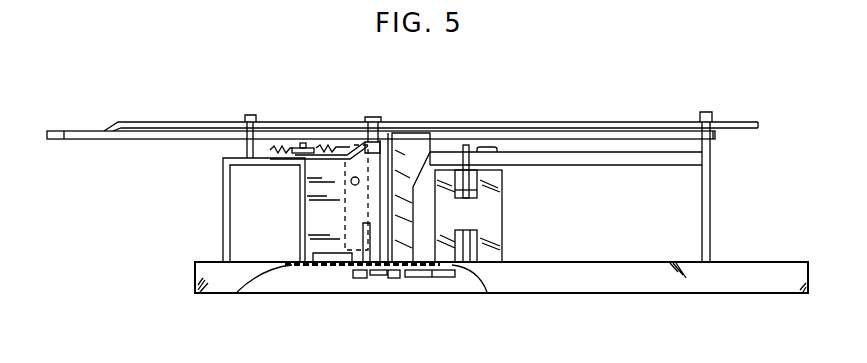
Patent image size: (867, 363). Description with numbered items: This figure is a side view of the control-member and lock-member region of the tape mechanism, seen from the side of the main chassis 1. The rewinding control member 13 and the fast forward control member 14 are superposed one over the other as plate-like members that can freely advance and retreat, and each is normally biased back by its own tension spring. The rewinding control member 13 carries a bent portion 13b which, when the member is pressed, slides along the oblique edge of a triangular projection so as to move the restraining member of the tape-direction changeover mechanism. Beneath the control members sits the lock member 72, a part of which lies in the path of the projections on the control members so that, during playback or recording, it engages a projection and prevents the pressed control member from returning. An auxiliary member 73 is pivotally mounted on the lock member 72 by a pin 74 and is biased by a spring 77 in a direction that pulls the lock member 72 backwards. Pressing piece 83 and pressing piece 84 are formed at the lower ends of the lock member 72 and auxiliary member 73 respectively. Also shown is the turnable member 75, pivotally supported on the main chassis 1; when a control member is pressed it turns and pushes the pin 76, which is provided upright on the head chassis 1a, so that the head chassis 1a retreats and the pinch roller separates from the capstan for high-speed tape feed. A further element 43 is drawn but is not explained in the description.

The main chassis 1 is at (637, 272).
The head chassis 1a is at (490, 222).
The rewinding control member 13 is at (68, 131).
The bent portion 13b is at (410, 278).
The fast forward control member 14 is at (133, 122).
The post 43 is at (368, 162).
The lock member 72 is at (320, 176).
The auxiliary member 73 is at (335, 232).
The pin 74 is at (352, 185).
The turnable member 75 is at (443, 152).
The pin 76 is at (478, 157).
The spring 77 is at (288, 149).
The pressing piece 83 is at (378, 279).
The pressing piece 84 is at (355, 279).